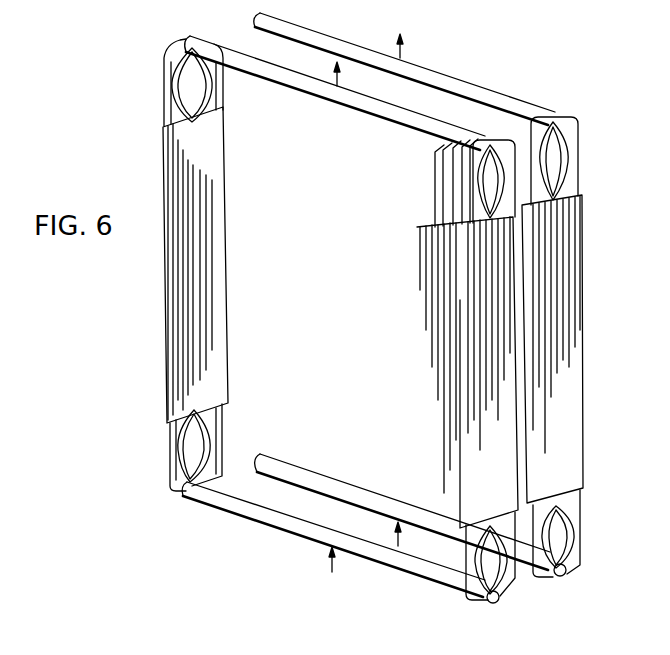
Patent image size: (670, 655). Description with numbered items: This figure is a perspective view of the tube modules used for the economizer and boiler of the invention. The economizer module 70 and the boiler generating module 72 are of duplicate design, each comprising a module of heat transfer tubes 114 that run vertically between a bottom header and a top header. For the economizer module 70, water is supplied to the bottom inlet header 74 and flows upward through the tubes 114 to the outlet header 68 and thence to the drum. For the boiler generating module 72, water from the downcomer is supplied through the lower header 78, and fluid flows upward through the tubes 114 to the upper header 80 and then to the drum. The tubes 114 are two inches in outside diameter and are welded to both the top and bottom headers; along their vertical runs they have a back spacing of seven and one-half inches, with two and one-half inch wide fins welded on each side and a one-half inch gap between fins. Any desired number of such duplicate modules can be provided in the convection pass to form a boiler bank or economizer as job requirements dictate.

The outlet header 68 is at (488, 96).
The upper header 80 is at (352, 100).
The bottom inlet header 74 is at (312, 478).
The lower header 78 is at (327, 535).
The tubes 114 is at (213, 307).
The boiler generating module 72 is at (426, 405).
The economizer module 70 is at (590, 333).